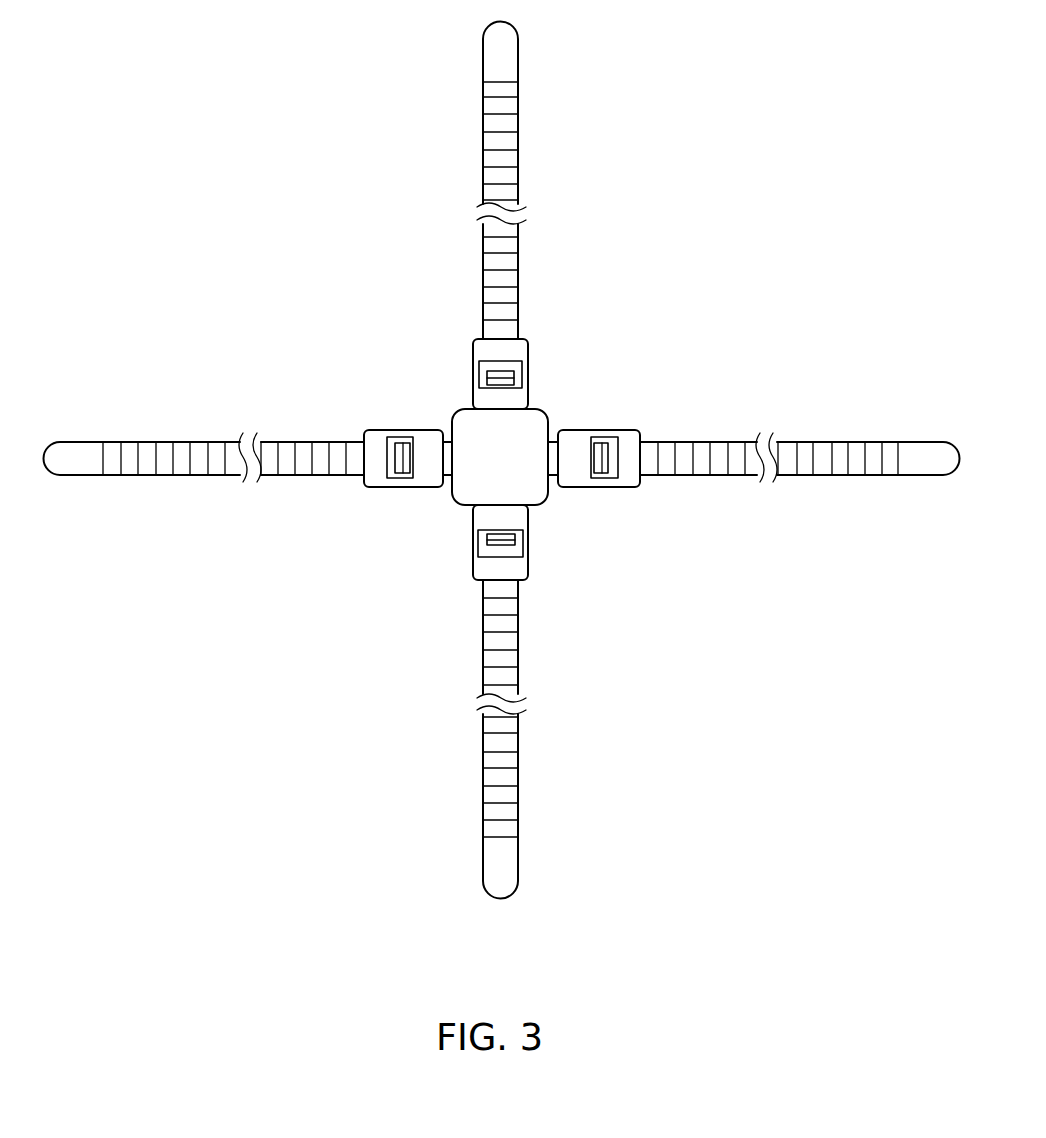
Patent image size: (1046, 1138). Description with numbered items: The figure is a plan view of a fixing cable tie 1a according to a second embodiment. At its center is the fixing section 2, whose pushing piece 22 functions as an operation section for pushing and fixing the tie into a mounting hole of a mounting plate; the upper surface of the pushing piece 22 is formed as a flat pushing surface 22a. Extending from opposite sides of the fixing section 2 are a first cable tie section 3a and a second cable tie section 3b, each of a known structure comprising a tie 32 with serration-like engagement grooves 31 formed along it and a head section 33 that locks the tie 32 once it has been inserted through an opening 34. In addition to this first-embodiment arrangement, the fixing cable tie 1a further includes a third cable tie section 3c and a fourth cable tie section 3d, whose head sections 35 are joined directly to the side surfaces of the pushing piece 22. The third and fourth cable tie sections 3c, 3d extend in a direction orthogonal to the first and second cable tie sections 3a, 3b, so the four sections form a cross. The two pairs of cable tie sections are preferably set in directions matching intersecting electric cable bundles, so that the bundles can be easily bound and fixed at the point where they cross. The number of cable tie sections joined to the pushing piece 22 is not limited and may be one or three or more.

The fixing cable tie 1a is at (694, 320).
The fixing section 2 is at (571, 512).
The pushing piece 22 is at (455, 503).
The pushing surface 22a is at (532, 443).
The first cable tie section 3a is at (772, 368).
The second cable tie section 3b is at (292, 367).
The third cable tie section 3c is at (562, 161).
The fourth cable tie section 3d is at (576, 645).
The engagement grooves 31 is at (162, 458).
The tie 32 is at (197, 475).
The head section 33 is at (432, 430).
The opening 34 is at (390, 448).
The head sections 35 is at (483, 401).